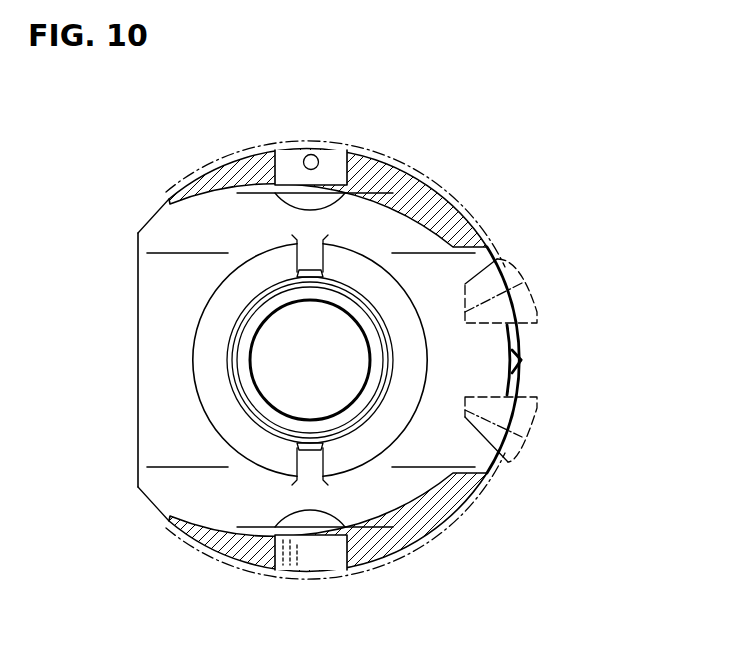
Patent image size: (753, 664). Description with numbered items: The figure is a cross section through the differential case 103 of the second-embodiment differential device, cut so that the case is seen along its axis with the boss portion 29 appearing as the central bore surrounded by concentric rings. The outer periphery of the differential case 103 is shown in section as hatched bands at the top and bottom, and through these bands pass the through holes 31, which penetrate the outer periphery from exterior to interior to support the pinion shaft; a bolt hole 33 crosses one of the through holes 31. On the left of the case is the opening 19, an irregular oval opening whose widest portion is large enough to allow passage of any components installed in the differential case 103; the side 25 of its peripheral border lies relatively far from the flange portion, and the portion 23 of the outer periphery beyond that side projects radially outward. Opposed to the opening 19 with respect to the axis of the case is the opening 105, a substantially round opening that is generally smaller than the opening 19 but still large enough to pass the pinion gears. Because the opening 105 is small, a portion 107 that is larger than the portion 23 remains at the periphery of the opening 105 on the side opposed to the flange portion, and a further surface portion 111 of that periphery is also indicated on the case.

The opening 19 is at (518, 266).
The portion of the outer periphery 23 is at (181, 332).
The side of the peripheral border 25 is at (150, 410).
The boss portion 29 is at (248, 392).
The through hole 31 is at (279, 162).
The bolt hole 33 is at (318, 160).
The differential case 103 is at (475, 150).
The opening 105 is at (588, 358).
The portion 107 is at (512, 373).
The outer peripheral surface portion 111 is at (512, 350).